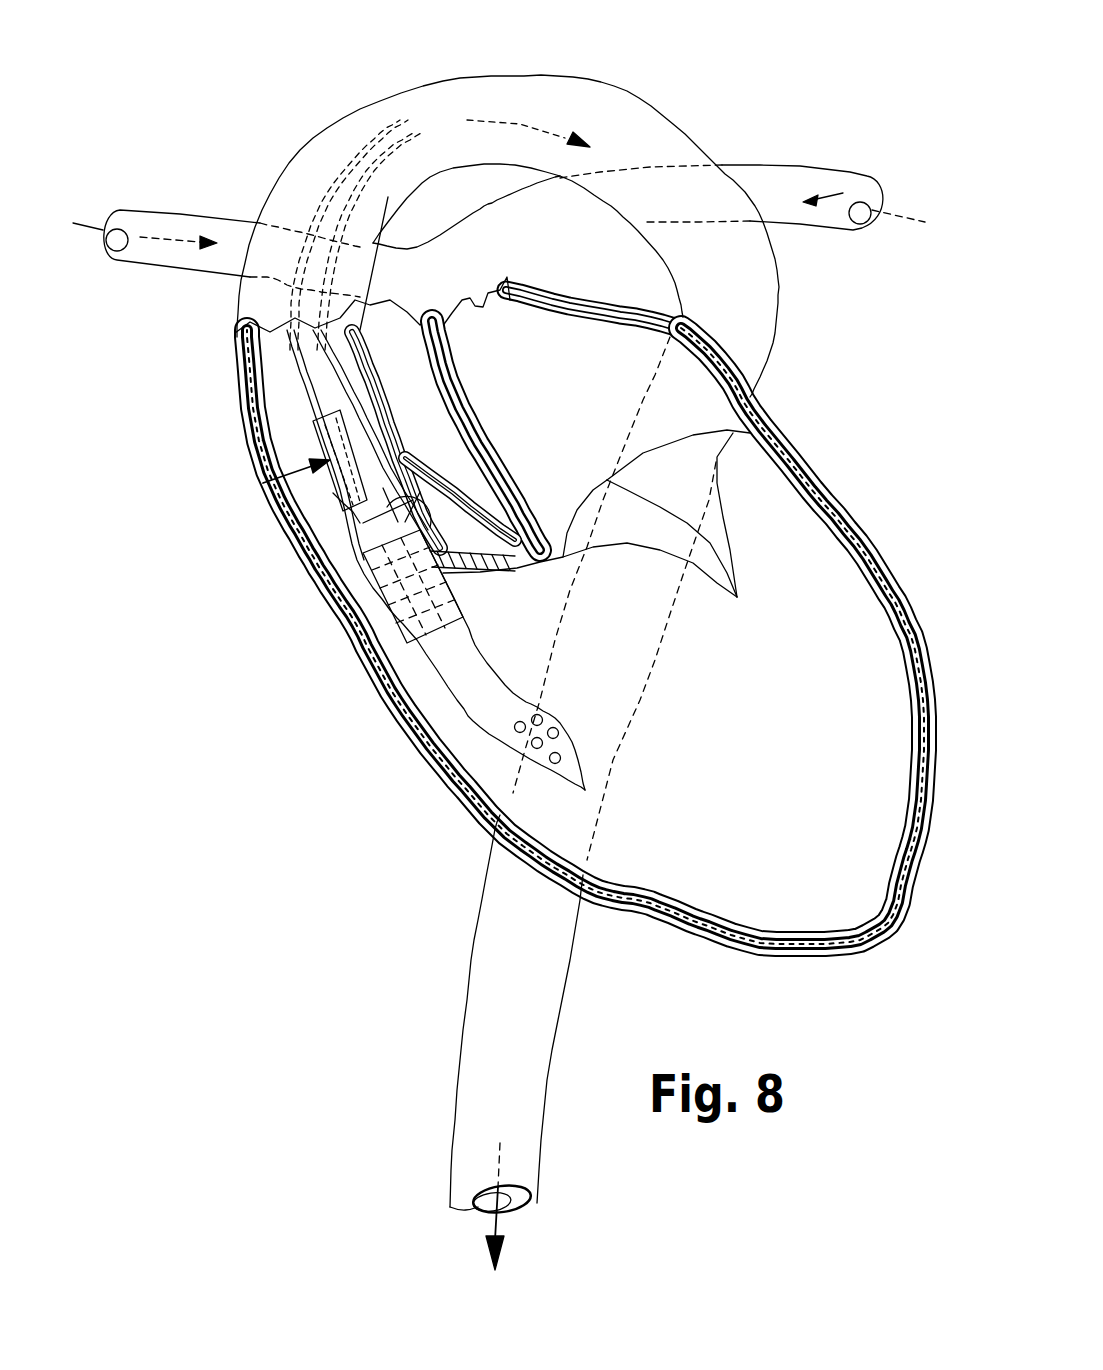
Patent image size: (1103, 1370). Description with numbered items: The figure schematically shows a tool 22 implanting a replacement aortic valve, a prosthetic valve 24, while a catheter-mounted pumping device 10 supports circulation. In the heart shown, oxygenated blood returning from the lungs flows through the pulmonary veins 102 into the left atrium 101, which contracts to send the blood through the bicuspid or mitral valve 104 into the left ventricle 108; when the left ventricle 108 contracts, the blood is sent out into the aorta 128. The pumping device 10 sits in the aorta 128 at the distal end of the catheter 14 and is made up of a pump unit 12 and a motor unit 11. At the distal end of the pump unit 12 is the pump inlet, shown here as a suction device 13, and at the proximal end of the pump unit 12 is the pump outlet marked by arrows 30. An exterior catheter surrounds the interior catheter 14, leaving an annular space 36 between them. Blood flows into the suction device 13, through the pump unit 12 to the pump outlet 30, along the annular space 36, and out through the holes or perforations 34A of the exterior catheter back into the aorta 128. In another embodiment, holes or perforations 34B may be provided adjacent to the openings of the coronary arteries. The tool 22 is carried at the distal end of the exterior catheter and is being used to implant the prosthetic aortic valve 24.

The pumping device 10 is at (337, 490).
The motor unit 11 is at (337, 433).
The pump unit 12 is at (387, 507).
The suction device 13 is at (480, 673).
The catheter 14 is at (317, 377).
The tool 22 is at (363, 563).
The prosthetic valve 24 is at (360, 647).
The pump outlet 30 is at (388, 505).
The holes or perforations 34A is at (290, 297).
The holes or perforations 34B is at (343, 503).
The annular space 36 is at (323, 370).
The left atrium 101 is at (537, 382).
The pulmonary veins 102 is at (802, 197).
The mitral valve 104 is at (703, 460).
The left ventricle 108 is at (690, 785).
The aorta 128 is at (590, 84).